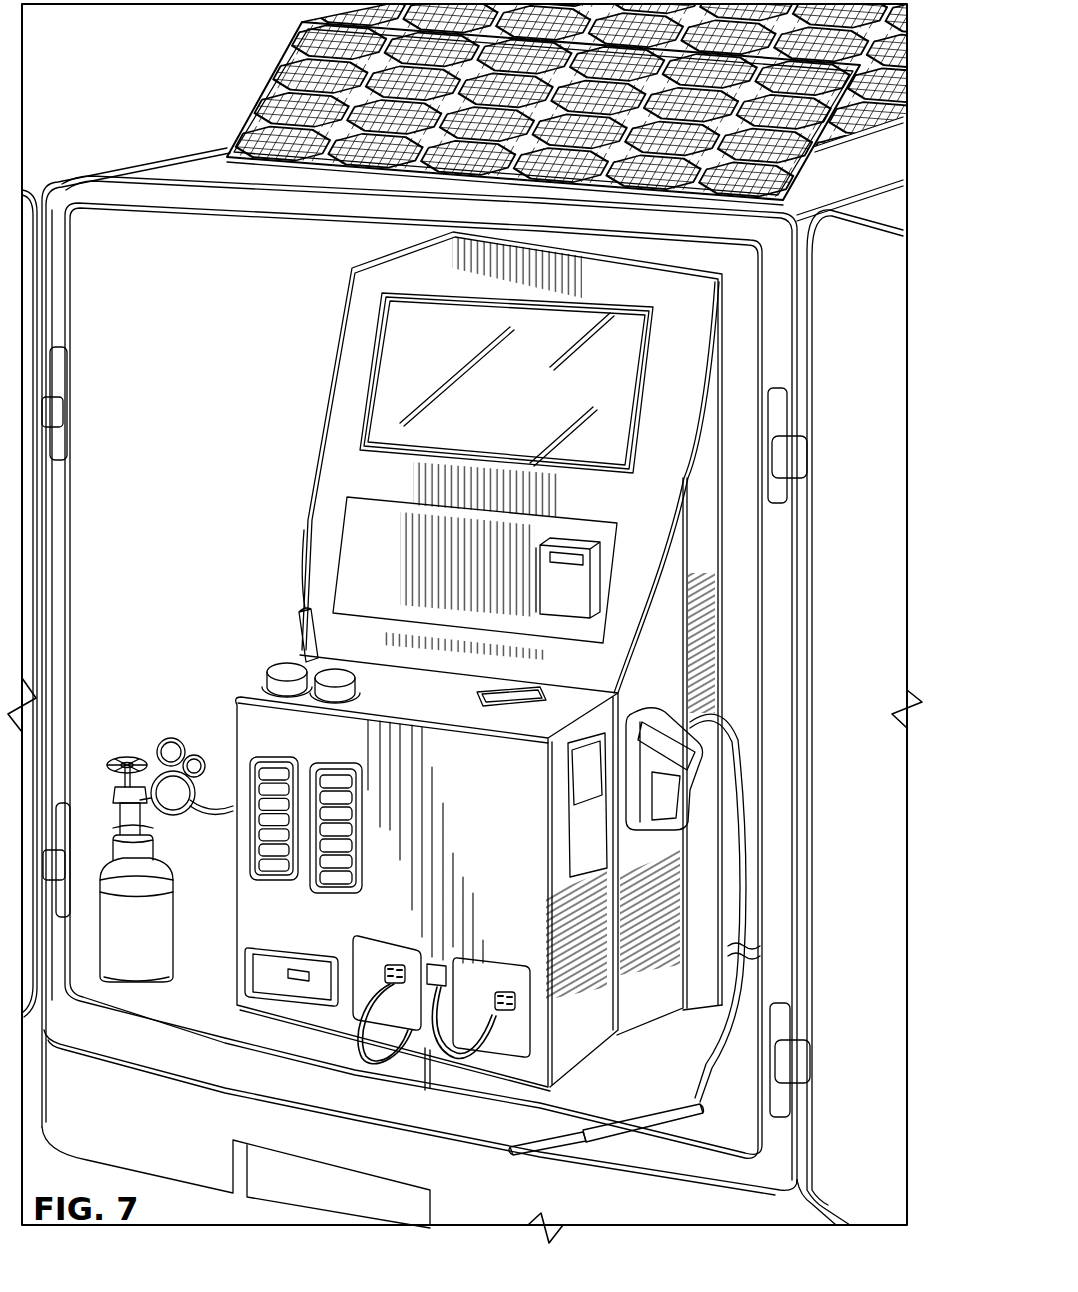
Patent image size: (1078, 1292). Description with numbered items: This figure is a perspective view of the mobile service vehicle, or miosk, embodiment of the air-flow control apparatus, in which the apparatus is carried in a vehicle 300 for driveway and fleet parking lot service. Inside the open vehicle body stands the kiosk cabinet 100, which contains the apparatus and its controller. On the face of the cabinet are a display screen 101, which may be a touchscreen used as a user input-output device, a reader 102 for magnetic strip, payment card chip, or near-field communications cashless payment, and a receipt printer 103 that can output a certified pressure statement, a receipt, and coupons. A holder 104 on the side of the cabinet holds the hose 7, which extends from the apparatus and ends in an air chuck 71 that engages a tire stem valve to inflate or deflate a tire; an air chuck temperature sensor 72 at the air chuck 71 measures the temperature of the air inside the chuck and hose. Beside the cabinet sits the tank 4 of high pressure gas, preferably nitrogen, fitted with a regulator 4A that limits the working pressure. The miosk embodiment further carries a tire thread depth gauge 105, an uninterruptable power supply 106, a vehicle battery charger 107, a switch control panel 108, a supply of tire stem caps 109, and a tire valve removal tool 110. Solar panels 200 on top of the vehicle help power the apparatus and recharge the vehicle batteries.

The enclosure cabinet 300 is at (198, 192).
The solar panels 200 is at (290, 147).
The kiosk cabinet 100 is at (700, 290).
The display screen 101 is at (613, 377).
The reader 102 is at (605, 570).
The receipt printer 103 is at (548, 683).
The nozzle holder 104 is at (673, 735).
The tire thread depth gauge 105 is at (590, 838).
The uninterruptable power supply 106 is at (360, 1028).
The vehicle battery charger 107 is at (272, 973).
The switch control panel 108 is at (262, 763).
The supply of tire stem caps 109 is at (290, 660).
The tire valve removal tool 110 is at (303, 608).
The tank 4 is at (152, 924).
The regulator 4A is at (157, 756).
The hose 7 is at (708, 1099).
The air chuck 71 is at (543, 1150).
The air chuck temperature sensor 72 is at (562, 1126).